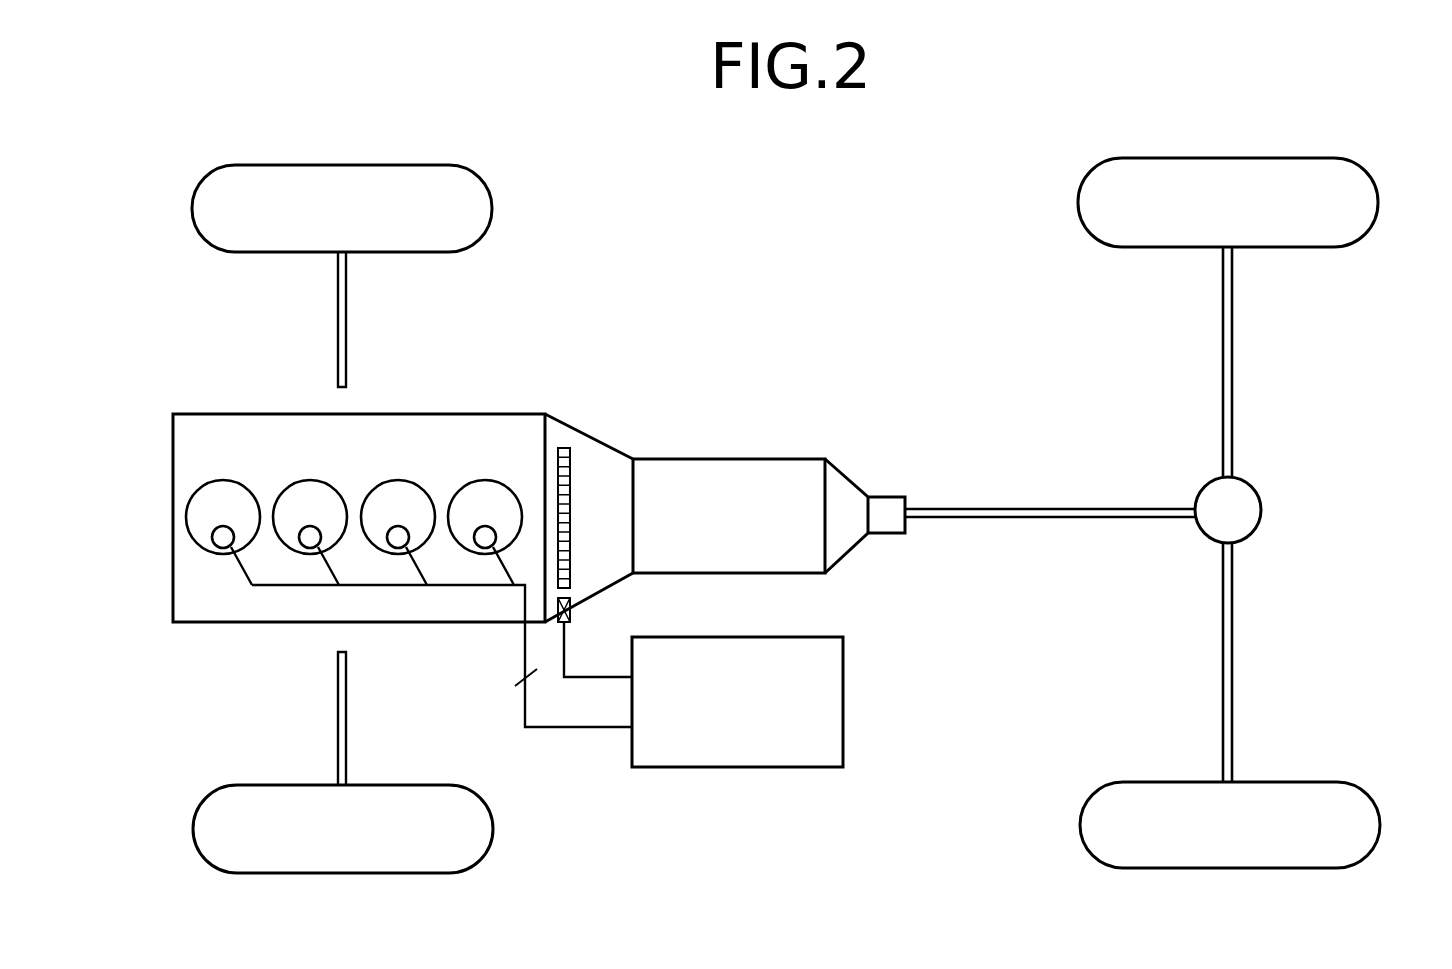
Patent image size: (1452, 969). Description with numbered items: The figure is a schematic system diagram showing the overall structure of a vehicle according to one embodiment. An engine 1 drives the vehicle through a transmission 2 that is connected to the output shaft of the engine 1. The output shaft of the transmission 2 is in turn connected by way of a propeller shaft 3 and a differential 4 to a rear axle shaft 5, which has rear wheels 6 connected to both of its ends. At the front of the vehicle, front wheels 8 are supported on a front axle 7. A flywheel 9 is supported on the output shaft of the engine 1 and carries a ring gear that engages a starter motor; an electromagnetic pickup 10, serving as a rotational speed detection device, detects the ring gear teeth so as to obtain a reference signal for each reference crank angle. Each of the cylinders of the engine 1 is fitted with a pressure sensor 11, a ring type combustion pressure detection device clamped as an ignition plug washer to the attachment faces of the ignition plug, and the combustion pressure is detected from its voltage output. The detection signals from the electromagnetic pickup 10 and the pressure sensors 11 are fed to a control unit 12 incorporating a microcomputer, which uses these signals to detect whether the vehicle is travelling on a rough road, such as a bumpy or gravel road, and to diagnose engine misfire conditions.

The engine 1 is at (436, 412).
The transmission 2 is at (740, 458).
The propeller shaft 3 is at (1046, 507).
The differential 4 is at (1262, 505).
The rear axle shaft 5 is at (1233, 344).
The rear wheels 6 is at (1379, 200).
The front axle 7 is at (348, 312).
The front wheels 8 is at (493, 205).
The flywheel 9 is at (575, 450).
The electromagnetic pickup 10 is at (572, 610).
The pressure sensor 11 is at (477, 529).
The control unit 12 is at (844, 692).